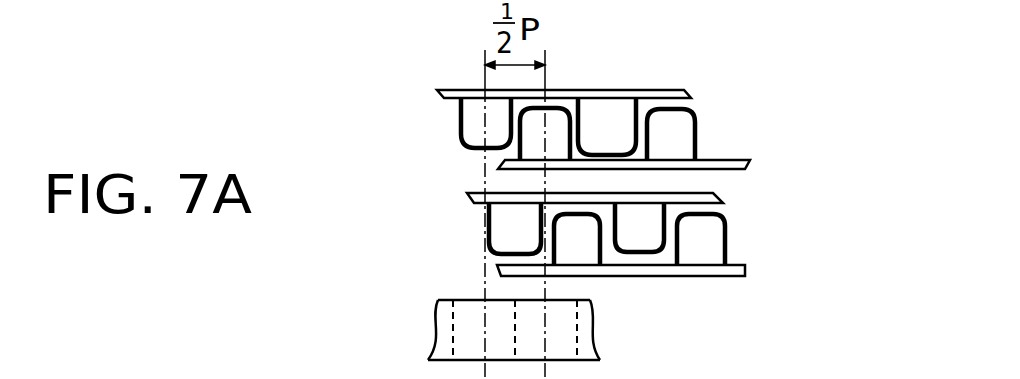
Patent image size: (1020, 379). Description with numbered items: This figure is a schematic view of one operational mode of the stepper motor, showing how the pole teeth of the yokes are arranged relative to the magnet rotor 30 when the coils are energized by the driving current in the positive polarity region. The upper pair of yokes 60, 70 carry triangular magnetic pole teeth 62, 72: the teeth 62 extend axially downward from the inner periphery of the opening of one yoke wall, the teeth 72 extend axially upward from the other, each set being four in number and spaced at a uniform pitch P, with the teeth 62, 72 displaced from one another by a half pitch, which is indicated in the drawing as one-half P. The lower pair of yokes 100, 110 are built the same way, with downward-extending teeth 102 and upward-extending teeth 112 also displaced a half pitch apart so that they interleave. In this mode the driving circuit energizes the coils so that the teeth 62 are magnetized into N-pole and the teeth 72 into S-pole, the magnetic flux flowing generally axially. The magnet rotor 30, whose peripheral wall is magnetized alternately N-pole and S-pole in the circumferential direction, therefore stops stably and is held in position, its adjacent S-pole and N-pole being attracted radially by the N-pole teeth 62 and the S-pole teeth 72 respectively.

The magnet rotor 30 is at (420, 349).
The yoke 60 is at (665, 84).
The magnetic pole teeth 62 is at (465, 117).
The yoke 70 is at (760, 163).
The magnetic pole teeth 72 is at (564, 110).
The yoke 100 is at (460, 196).
The magnetic pole teeth 102 is at (498, 218).
The yoke 110 is at (750, 282).
The magnetic pole teeth 112 is at (574, 228).